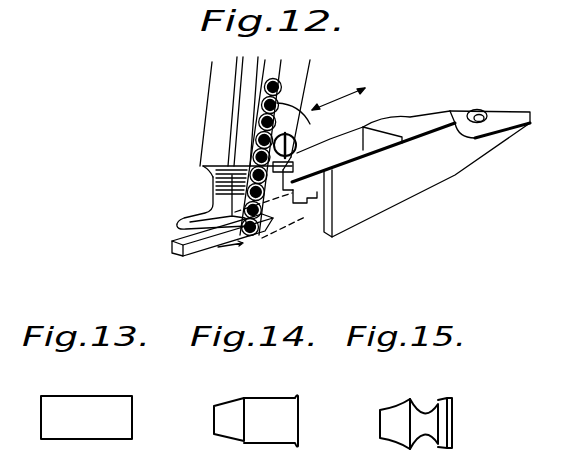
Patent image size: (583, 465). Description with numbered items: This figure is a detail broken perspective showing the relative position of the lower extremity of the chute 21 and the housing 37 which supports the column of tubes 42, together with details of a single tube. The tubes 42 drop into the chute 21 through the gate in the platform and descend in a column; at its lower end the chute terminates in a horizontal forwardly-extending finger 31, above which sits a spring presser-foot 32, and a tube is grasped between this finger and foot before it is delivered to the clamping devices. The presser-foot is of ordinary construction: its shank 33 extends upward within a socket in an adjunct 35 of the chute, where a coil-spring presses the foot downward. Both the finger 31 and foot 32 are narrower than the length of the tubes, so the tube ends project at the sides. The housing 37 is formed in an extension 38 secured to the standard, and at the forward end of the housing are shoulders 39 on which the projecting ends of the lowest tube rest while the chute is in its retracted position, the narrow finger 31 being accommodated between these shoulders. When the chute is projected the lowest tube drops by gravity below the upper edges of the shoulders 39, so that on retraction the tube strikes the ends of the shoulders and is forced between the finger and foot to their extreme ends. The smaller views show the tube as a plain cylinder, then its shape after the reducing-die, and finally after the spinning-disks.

The chute 21 is at (305, 115).
The finger 31 is at (211, 246).
The spring presser-foot 32 is at (210, 214).
The shank 33 is at (238, 140).
The adjunct 35 is at (217, 108).
The housing 37 is at (338, 157).
The extension 38 is at (405, 128).
The shoulders 39 is at (318, 200).
The tubes 42 is at (295, 142).